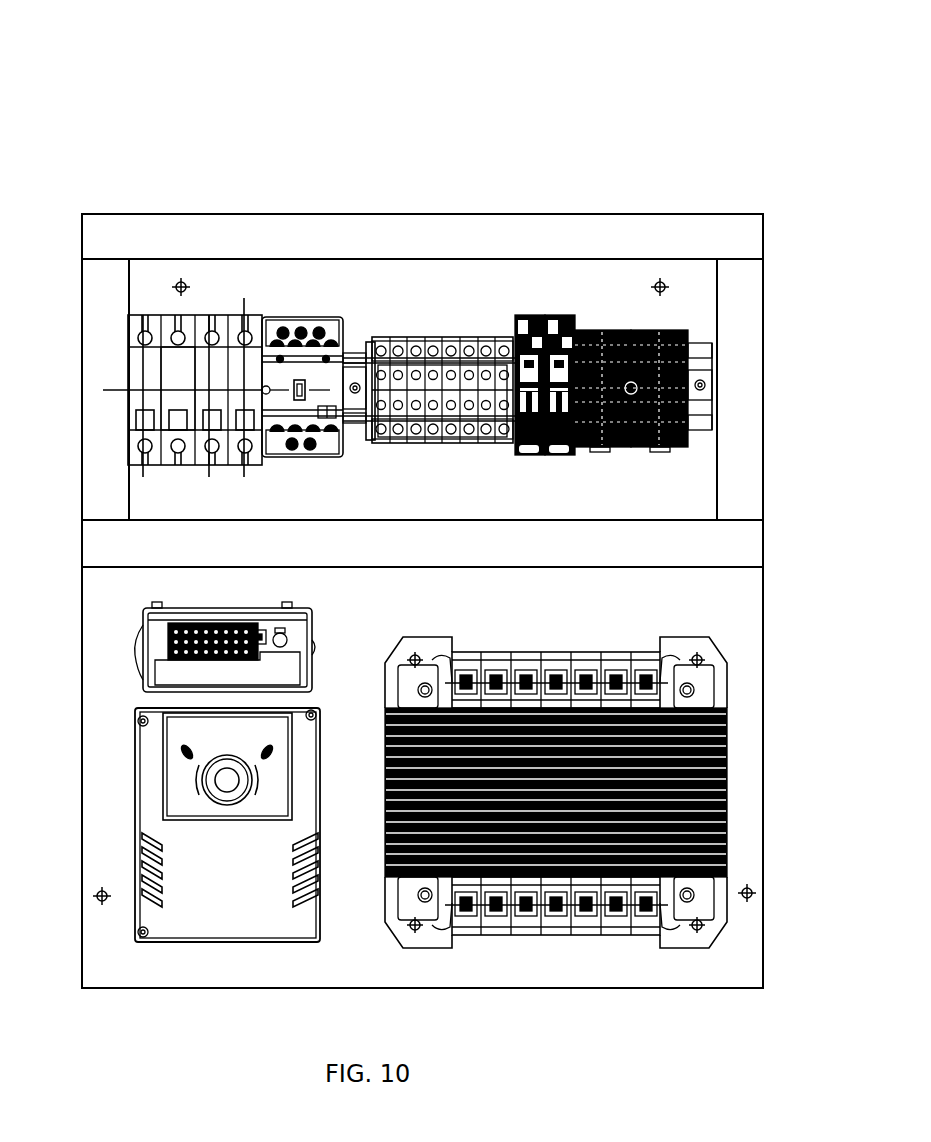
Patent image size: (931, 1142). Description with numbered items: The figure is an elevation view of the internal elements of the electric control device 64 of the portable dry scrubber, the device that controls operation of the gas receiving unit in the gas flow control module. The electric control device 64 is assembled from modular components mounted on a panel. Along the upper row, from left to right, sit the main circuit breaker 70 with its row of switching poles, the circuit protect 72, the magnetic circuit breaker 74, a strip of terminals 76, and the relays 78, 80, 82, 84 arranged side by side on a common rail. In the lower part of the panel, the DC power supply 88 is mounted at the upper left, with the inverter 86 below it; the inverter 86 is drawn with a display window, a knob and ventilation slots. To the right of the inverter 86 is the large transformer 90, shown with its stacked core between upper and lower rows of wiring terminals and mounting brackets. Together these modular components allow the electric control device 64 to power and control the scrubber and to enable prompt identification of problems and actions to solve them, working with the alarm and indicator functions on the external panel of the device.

The electric control device 64 is at (160, 45).
The main circuit breaker 70 is at (143, 300).
The circuit protect 72 is at (208, 300).
The magnetic circuit breaker 74 is at (308, 300).
The terminal block 76 is at (407, 322).
The relay 78 is at (522, 296).
The relay 80 is at (555, 296).
The relay 82 is at (593, 312).
The relay 84 is at (663, 312).
The inverter 86 is at (135, 768).
The DC power supply 88 is at (140, 655).
The transformer 90 is at (745, 763).